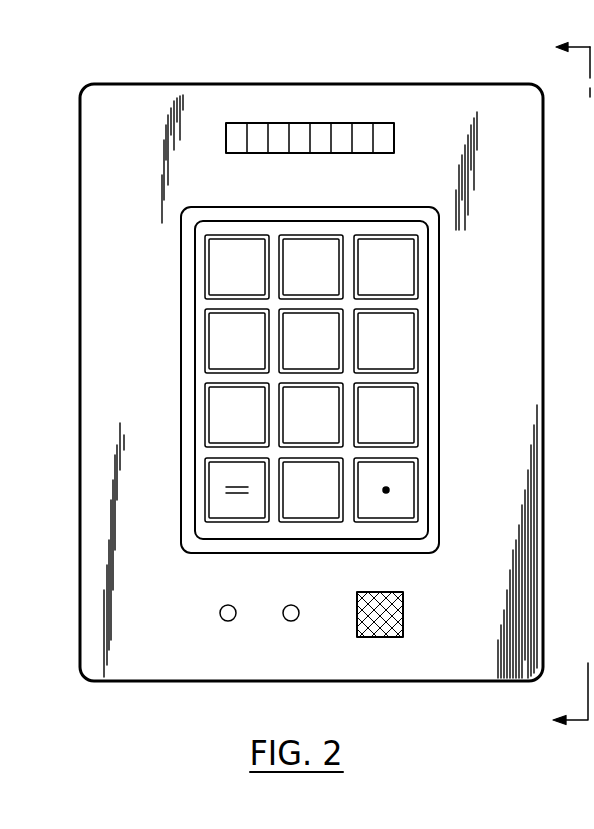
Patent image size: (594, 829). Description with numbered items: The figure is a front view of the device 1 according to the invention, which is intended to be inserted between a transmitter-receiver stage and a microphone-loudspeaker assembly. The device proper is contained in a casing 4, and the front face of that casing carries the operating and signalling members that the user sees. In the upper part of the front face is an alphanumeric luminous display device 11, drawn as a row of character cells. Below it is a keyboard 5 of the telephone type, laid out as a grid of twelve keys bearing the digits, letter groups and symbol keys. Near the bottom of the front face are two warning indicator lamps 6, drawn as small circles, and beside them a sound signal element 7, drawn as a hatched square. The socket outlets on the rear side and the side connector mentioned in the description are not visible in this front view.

The device 1 is at (548, 331).
The casing 4 is at (98, 236).
The keyboard 5 is at (203, 357).
The warning indicator lamps 6 is at (220, 617).
The sound signal element 7 is at (403, 611).
The alphanumeric luminous display device 11 is at (394, 136).